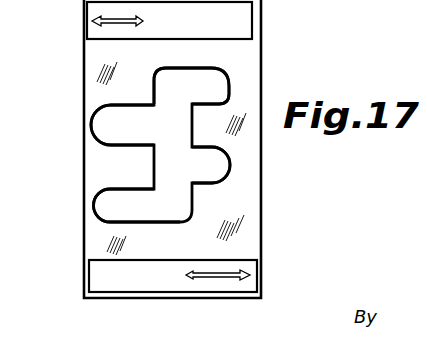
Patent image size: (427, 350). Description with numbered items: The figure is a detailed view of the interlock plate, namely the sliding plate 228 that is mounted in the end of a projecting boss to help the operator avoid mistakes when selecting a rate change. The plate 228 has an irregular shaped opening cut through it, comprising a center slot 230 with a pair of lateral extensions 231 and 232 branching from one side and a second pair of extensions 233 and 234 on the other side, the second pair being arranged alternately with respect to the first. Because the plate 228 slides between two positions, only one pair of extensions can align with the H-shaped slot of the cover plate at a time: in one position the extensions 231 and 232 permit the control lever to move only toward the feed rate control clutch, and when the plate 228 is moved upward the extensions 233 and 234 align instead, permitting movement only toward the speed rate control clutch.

The sliding plate 228 is at (92, 238).
The center slot 230 is at (167, 155).
The lateral extension 231 is at (215, 77).
The lateral extension 232 is at (220, 170).
The lateral extension 233 is at (107, 117).
The lateral extension 234 is at (110, 200).